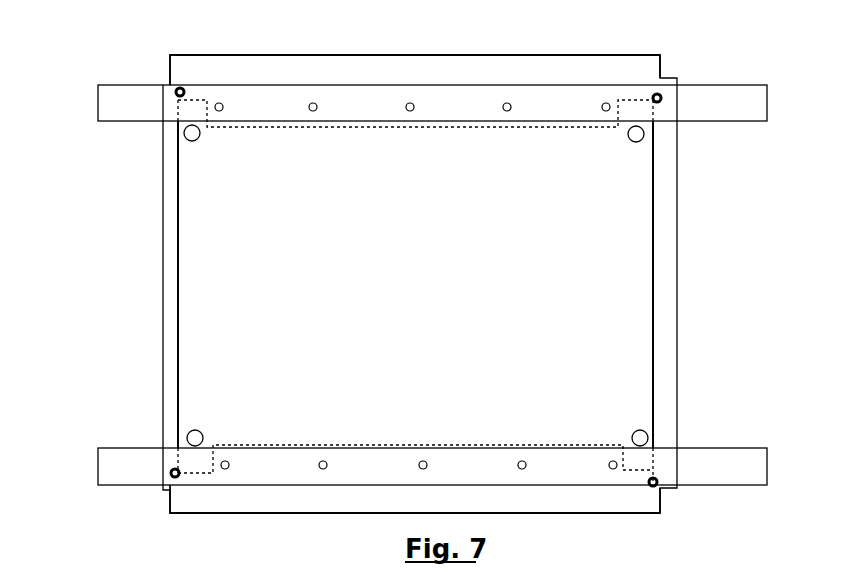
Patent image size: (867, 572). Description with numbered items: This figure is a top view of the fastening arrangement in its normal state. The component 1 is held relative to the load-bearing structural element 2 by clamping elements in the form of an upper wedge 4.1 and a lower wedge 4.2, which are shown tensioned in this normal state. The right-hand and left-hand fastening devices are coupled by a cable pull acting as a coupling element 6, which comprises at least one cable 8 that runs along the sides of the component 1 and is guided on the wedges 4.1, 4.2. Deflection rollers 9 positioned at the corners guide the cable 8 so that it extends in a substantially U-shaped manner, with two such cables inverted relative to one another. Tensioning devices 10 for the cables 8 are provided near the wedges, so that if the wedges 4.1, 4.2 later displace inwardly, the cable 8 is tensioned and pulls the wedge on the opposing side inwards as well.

The component 1 is at (270, 318).
The load-bearing structural element 2 is at (687, 108).
The clamping element, upper wedge 4.1 is at (638, 70).
The clamping element, lower wedge 4.2 is at (415, 284).
The coupling element 6 is at (178, 259).
The cable 8 is at (415, 284).
The deflection roller 9 is at (186, 135).
The tensioning device 10 is at (177, 90).